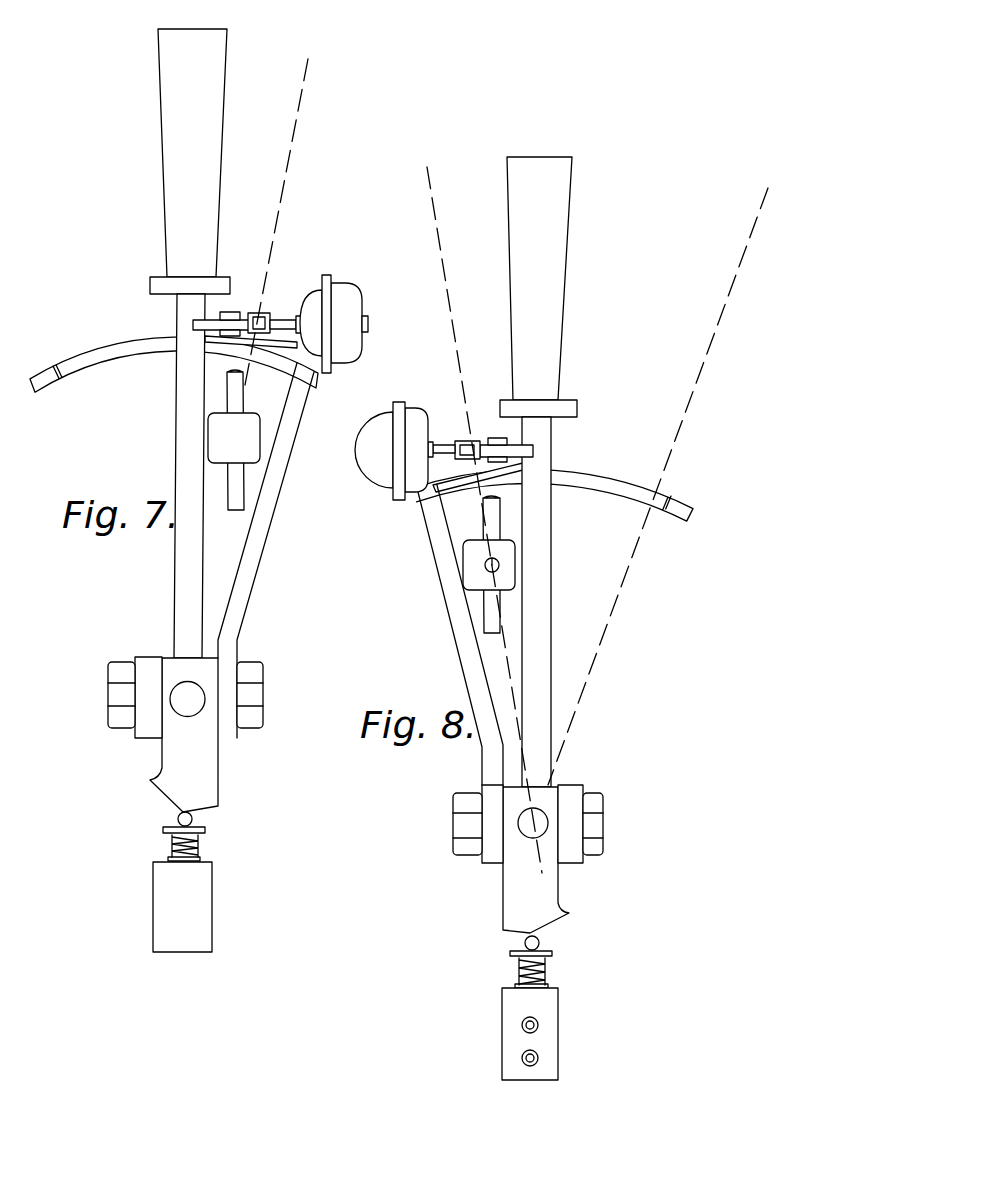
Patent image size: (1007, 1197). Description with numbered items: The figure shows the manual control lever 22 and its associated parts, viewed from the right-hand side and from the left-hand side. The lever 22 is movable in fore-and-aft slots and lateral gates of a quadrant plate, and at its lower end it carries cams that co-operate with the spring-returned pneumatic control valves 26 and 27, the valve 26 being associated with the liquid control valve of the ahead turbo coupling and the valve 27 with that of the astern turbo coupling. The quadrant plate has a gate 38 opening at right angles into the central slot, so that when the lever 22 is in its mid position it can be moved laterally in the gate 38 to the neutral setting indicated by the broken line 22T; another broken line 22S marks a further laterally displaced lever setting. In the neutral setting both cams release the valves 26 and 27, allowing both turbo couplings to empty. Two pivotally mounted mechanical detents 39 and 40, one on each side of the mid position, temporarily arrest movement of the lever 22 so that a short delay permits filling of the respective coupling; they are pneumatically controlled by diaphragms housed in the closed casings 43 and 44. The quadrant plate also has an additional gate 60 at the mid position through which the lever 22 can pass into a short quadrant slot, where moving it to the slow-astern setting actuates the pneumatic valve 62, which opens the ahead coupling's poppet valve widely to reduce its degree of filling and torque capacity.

In FIG. 7, the manual control lever 22 is at (178, 610).
In FIG. 8, the manual control lever 22 is at (538, 596).
In FIG. 7, the broken-line lever position 22S is at (294, 132).
In FIG. 8, the broken-line lever position 22S is at (436, 222).
In FIG. 8, the neutral lever position 22T is at (738, 268).
In FIG. 7, the pneumatic control valve 26 is at (167, 894).
In FIG. 8, the pneumatic control valve 27 is at (505, 1021).
In FIG. 7, the gate 38 is at (108, 348).
In FIG. 8, the gate 38 is at (607, 481).
In FIG. 7, the mechanical detent 39 is at (193, 325).
In FIG. 8, the mechanical detent 40 is at (483, 443).
In FIG. 7, the closed casing 43 is at (347, 297).
In FIG. 8, the closed casing 44 is at (372, 479).
In FIG. 7, the additional gate 60 is at (222, 352).
In FIG. 8, the additional gate 60 is at (468, 479).
In FIG. 7, the pneumatic valve 62 is at (246, 449).
In FIG. 8, the pneumatic valve 62 is at (468, 568).